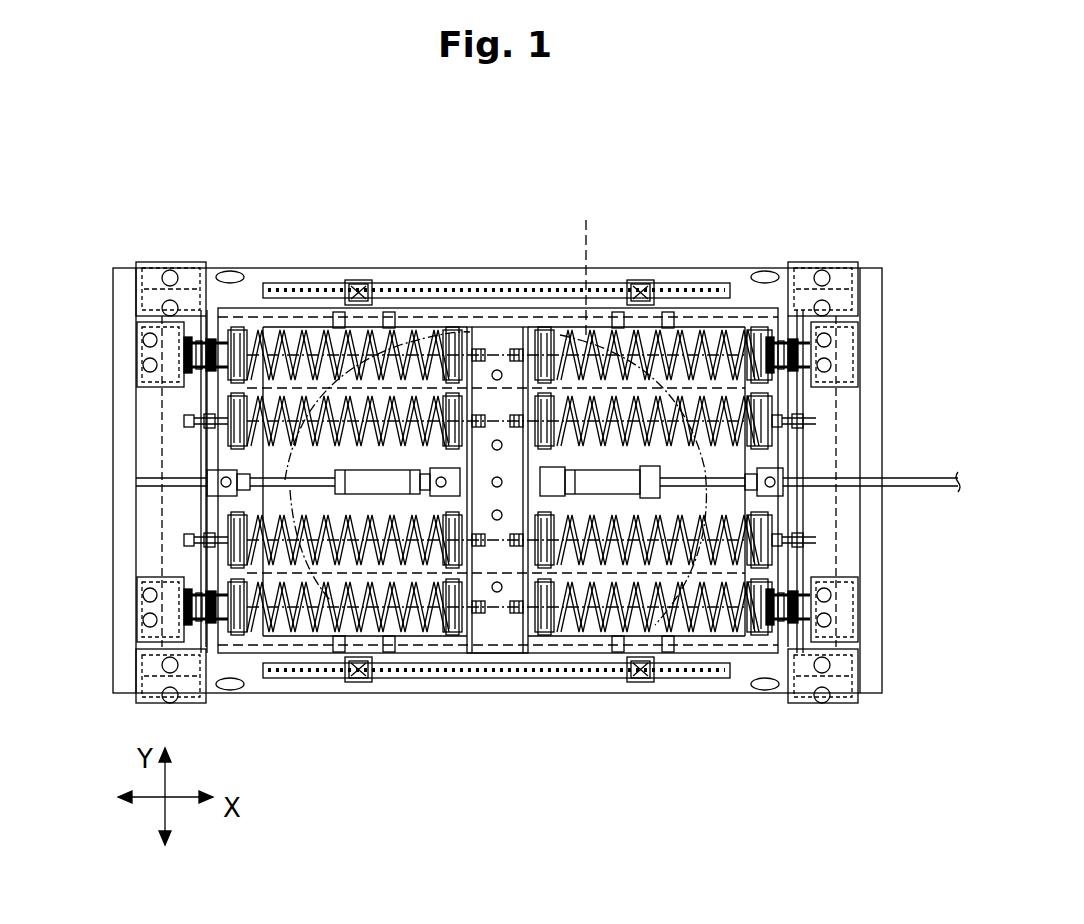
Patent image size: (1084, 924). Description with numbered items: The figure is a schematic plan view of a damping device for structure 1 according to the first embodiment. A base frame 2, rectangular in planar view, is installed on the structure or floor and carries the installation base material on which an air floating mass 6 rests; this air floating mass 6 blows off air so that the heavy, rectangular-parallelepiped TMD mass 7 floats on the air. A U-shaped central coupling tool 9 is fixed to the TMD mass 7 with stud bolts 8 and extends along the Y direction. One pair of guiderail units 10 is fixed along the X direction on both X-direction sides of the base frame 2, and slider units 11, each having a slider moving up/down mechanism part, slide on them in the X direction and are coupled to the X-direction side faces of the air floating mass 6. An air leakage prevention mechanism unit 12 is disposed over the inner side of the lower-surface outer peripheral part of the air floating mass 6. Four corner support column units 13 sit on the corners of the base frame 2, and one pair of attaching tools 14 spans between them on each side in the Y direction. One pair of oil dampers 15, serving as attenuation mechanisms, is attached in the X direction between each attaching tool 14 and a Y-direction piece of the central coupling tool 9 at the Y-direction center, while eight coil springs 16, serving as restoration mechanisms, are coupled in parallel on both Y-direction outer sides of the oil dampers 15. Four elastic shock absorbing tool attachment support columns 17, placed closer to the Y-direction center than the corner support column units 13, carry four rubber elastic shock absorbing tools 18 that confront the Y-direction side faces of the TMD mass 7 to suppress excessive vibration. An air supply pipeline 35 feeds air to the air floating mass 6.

The damping device for structure 1 is at (205, 243).
The base frame 2 is at (690, 695).
The air floating mass 6 is at (272, 462).
The TMD mass 7 is at (690, 327).
The stud bolts 8 is at (498, 592).
The central coupling tool 9 is at (488, 630).
The guiderail units 10 is at (520, 252).
The slider units 11 is at (357, 280).
The air leakage prevention mechanism unit 12 is at (599, 263).
The corner support column units 13 is at (862, 283).
The attaching tools 14 is at (800, 400).
The oil dampers 15 is at (368, 468).
The coil springs 16 is at (420, 327).
The elastic shock absorbing tool attachment support columns 17 is at (135, 352).
The elastic shock absorbing tools 18 is at (250, 325).
The air supply pipeline 35 is at (935, 491).